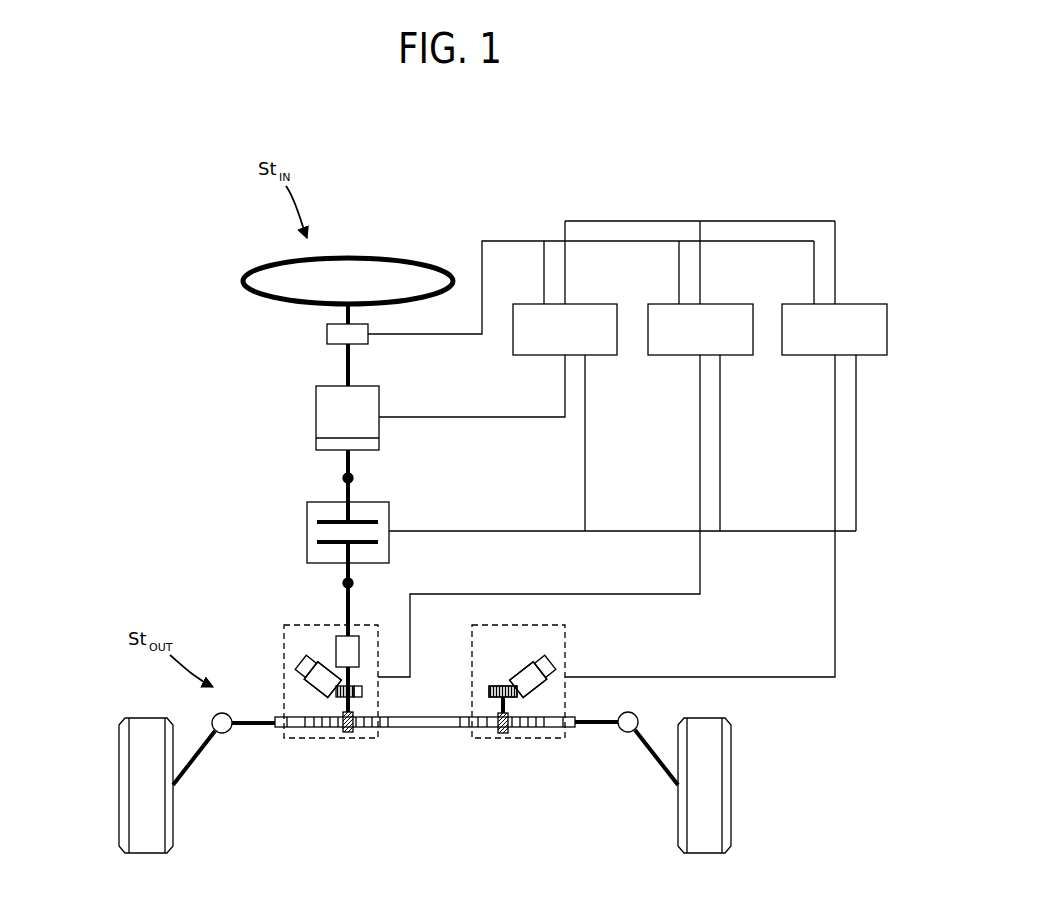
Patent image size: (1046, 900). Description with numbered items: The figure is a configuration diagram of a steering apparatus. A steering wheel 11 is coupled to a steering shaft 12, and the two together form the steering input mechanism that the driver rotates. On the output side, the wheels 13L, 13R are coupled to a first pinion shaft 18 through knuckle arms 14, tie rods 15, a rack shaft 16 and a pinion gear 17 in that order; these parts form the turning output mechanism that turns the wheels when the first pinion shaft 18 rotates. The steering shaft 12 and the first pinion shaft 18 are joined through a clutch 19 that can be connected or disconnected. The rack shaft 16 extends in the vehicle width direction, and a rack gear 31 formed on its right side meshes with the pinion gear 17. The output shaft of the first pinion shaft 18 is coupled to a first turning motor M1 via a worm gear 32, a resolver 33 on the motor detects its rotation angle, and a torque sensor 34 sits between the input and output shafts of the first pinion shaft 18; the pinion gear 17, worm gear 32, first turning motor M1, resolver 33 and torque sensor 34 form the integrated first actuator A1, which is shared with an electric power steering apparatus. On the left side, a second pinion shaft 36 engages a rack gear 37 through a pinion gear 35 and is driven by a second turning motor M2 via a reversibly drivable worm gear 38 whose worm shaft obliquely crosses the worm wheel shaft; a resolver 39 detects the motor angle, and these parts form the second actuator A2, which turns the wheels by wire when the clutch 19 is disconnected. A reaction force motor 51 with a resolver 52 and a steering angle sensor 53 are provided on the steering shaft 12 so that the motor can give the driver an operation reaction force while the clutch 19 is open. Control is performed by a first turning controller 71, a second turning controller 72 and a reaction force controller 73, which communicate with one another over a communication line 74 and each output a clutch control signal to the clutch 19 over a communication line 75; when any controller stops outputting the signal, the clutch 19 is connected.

The steering wheel 11 is at (264, 273).
The steering shaft 12 is at (350, 358).
The wheel 13R is at (139, 774).
The wheel 13L is at (710, 774).
The knuckle arm 14 is at (203, 765).
The tie rod 15 is at (254, 726).
The rack shaft 16 is at (420, 728).
The pinion gear 17 is at (348, 734).
The first pinion shaft 18 is at (350, 604).
The clutch 19 is at (307, 528).
The rack gear 31 is at (368, 728).
The worm gear 32 is at (334, 703).
The resolver 33 is at (306, 662).
The torque sensor 34 is at (340, 648).
The pinion gear 35 is at (503, 734).
The second pinion shaft 36 is at (510, 700).
The rack gear 37 is at (482, 728).
The worm gear 38 is at (497, 681).
The resolver 39 is at (542, 661).
The reaction force motor 51 is at (316, 414).
The resolver 52 is at (316, 445).
The steering angle sensor 53 is at (327, 330).
The first turning controller 71 is at (722, 304).
The second turning controller 72 is at (857, 304).
The reaction force controller 73 is at (588, 304).
The communication line 74 is at (720, 221).
The communication line 75 is at (480, 531).
The first turning motor M1 is at (304, 681).
The second turning motor M2 is at (550, 678).
The first actuator A1 is at (380, 697).
The second actuator A2 is at (566, 697).